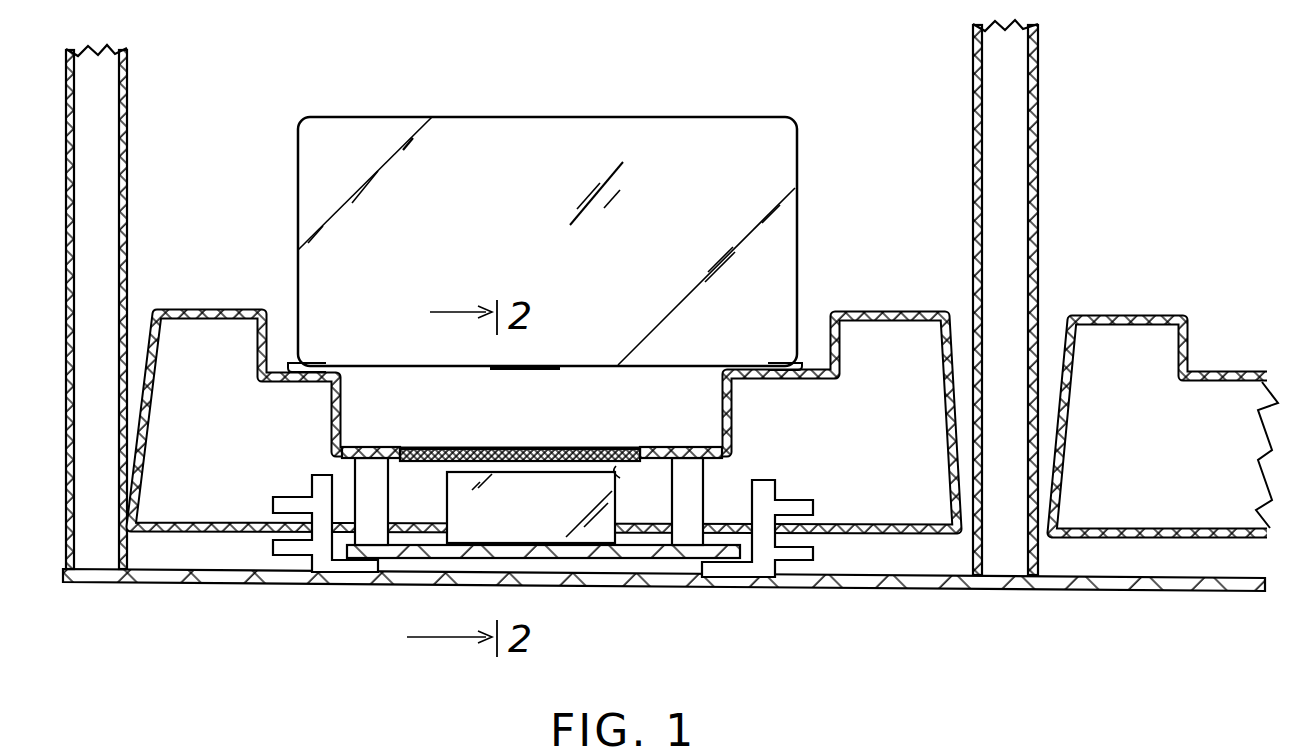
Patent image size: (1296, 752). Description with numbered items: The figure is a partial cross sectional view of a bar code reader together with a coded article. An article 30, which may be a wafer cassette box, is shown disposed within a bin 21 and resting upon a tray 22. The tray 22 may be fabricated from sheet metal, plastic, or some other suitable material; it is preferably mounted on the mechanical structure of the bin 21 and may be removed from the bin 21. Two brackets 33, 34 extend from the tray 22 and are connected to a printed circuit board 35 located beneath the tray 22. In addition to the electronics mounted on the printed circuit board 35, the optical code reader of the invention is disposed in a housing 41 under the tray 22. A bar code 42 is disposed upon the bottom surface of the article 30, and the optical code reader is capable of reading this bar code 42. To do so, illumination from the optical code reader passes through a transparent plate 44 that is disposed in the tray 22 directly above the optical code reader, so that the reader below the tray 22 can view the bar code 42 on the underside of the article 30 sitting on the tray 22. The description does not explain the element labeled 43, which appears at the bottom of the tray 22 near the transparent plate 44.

The bin 21 is at (819, 70).
The tray 22 is at (192, 308).
The article 30 is at (372, 116).
The bracket 33 is at (389, 492).
The bracket 34 is at (672, 485).
The printed circuit board 35 is at (476, 560).
The housing 41 is at (642, 462).
The bar code 42 is at (549, 372).
The tray bottom wall left portion 43 is at (404, 462).
The transparent plate 44 is at (508, 452).